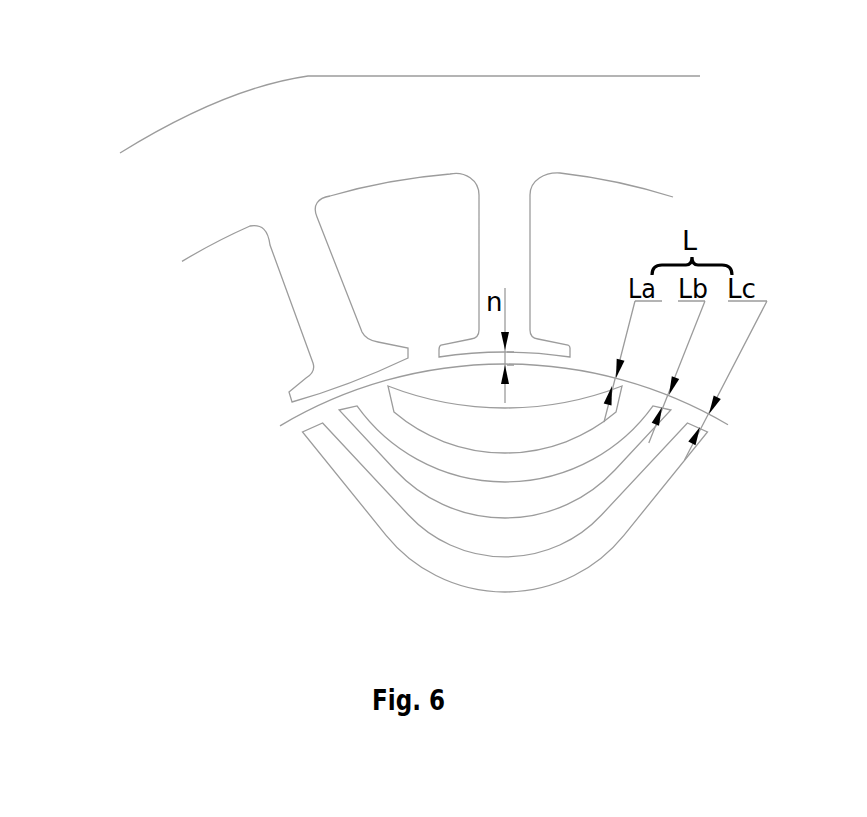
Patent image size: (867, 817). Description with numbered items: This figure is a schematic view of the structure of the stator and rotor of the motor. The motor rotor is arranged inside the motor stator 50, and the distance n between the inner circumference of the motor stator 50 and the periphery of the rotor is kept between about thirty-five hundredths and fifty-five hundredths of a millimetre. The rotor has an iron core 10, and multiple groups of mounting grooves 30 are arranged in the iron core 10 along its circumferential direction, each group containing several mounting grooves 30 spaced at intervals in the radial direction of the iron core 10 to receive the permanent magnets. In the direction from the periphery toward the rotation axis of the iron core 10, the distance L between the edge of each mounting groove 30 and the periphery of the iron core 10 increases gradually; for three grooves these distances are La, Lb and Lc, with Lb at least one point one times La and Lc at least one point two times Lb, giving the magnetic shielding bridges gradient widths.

The iron core 10 is at (363, 460).
The mounting grooves 30 is at (597, 473).
The motor stator 50 is at (335, 133).